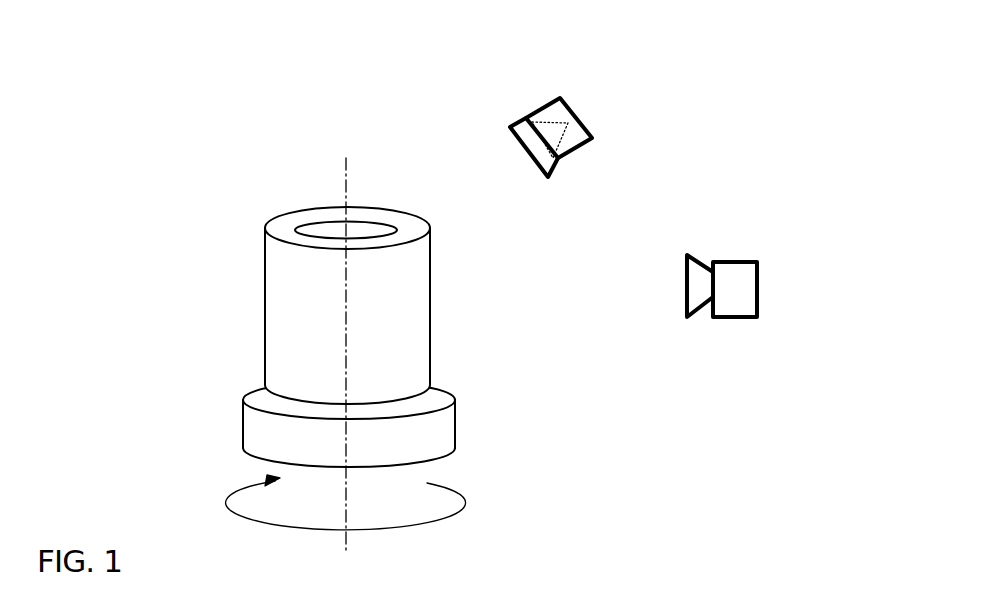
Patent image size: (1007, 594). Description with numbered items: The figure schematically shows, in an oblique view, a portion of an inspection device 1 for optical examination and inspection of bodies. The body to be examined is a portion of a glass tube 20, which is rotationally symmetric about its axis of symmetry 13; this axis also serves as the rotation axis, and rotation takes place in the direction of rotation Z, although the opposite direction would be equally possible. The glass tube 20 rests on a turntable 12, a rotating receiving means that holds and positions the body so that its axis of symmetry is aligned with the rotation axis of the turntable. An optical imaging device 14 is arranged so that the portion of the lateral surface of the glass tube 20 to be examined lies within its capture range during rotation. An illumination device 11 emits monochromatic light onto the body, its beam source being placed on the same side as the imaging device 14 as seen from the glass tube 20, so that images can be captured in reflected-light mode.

The inspection device 1 is at (218, 68).
The illumination device 11 is at (583, 122).
The turntable 12 is at (455, 427).
The axis of symmetry 13 is at (343, 192).
The optical imaging device 14 is at (733, 260).
The glass tube 20 is at (431, 353).
The direction of rotation Z is at (465, 502).